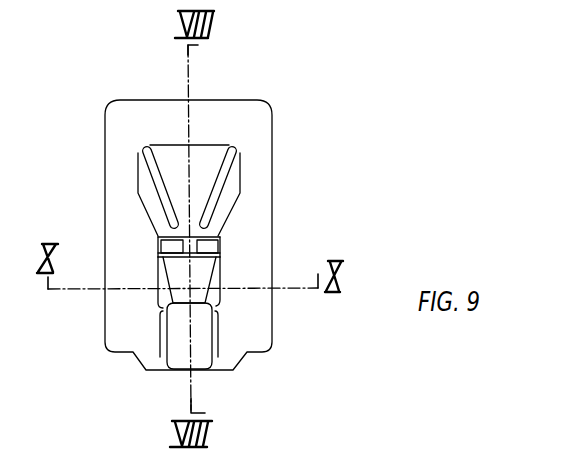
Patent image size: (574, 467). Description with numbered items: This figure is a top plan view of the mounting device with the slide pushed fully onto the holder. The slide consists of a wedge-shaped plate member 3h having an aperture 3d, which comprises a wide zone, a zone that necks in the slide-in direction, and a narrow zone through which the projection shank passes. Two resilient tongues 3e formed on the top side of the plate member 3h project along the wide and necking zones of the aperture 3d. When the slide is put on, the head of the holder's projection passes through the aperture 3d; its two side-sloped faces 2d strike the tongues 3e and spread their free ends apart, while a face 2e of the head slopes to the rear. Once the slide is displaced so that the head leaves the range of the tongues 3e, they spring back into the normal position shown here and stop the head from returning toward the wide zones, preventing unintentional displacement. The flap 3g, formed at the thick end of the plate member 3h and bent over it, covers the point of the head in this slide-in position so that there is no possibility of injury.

The wedge-shaped plate member 3h is at (267, 105).
The aperture 3d is at (170, 167).
The resilient tongues 3e is at (162, 198).
The face sloped to the rear 2e is at (220, 245).
The faces sloped to a side 2d is at (210, 291).
The flap 3g is at (200, 358).